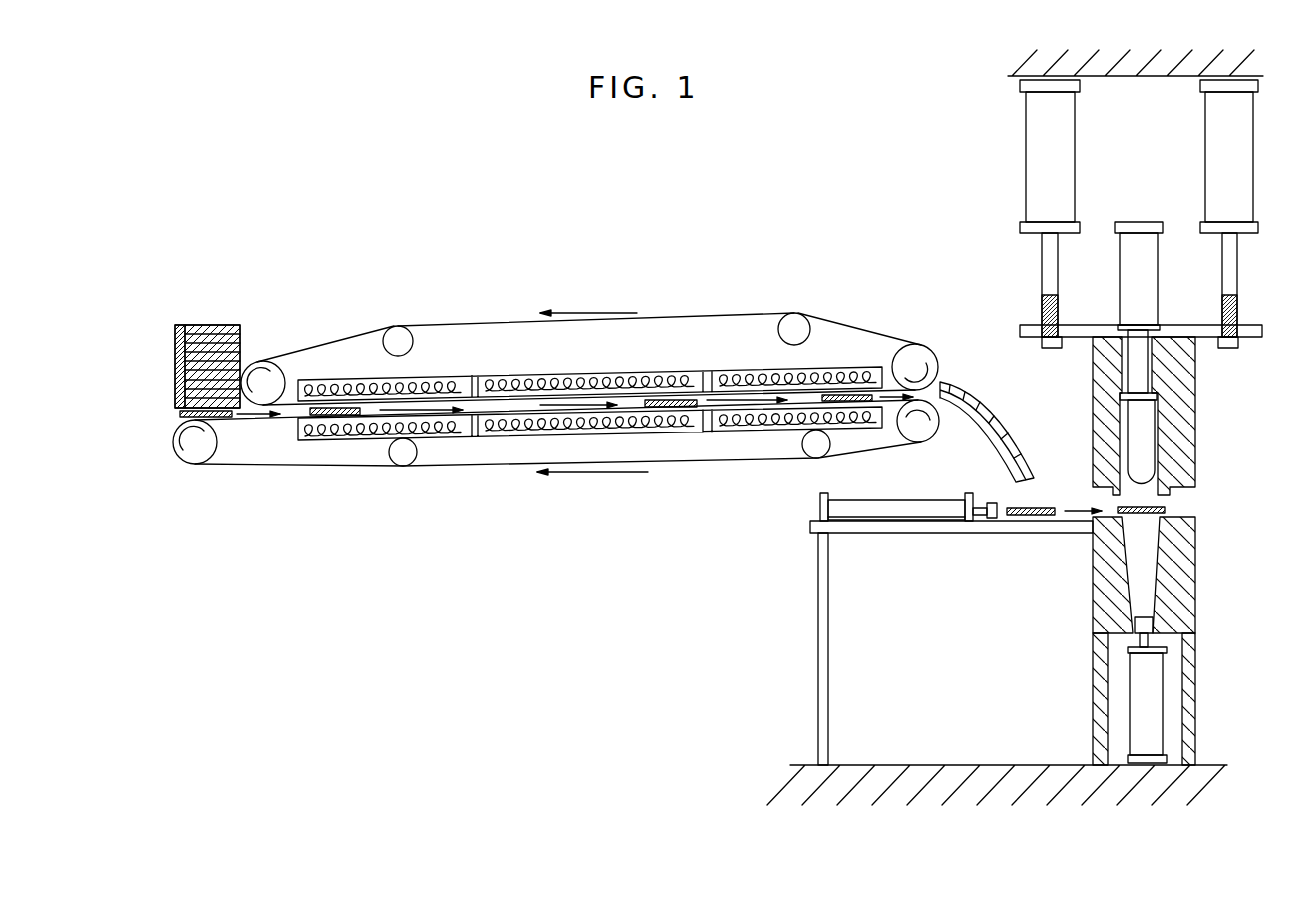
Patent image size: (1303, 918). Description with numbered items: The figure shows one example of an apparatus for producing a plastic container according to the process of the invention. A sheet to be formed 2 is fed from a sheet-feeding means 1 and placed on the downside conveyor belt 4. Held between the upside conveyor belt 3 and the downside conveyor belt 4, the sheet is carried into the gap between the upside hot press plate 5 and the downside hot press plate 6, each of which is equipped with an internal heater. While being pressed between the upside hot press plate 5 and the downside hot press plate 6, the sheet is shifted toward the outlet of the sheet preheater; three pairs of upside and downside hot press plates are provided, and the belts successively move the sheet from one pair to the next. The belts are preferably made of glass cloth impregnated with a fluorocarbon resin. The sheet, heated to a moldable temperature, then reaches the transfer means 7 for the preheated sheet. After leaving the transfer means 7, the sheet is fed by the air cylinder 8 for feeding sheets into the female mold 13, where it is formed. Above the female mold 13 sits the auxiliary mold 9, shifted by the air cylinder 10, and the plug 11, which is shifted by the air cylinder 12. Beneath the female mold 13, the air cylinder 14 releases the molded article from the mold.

The sheet-feeding means 1 is at (243, 331).
The sheet to be formed 2 is at (312, 411).
The upside conveyor belt 3 is at (338, 338).
The downside conveyor belt 4 is at (268, 465).
The upside hot press plate 5 is at (437, 386).
The downside hot press plate 6 is at (430, 432).
The transfer means for preheated sheet 7 is at (976, 403).
The air cylinder for feeding sheets 8 is at (899, 508).
The auxiliary mold 9 is at (1187, 421).
The air cylinder for shifting the auxiliary mold 10 is at (1243, 157).
The plug 11 is at (1138, 424).
The air cylinder for shifting the plug 12 is at (1150, 256).
The female mold 13 is at (1192, 538).
The air cylinder for releasing the molded article from the mold 14 is at (1153, 677).